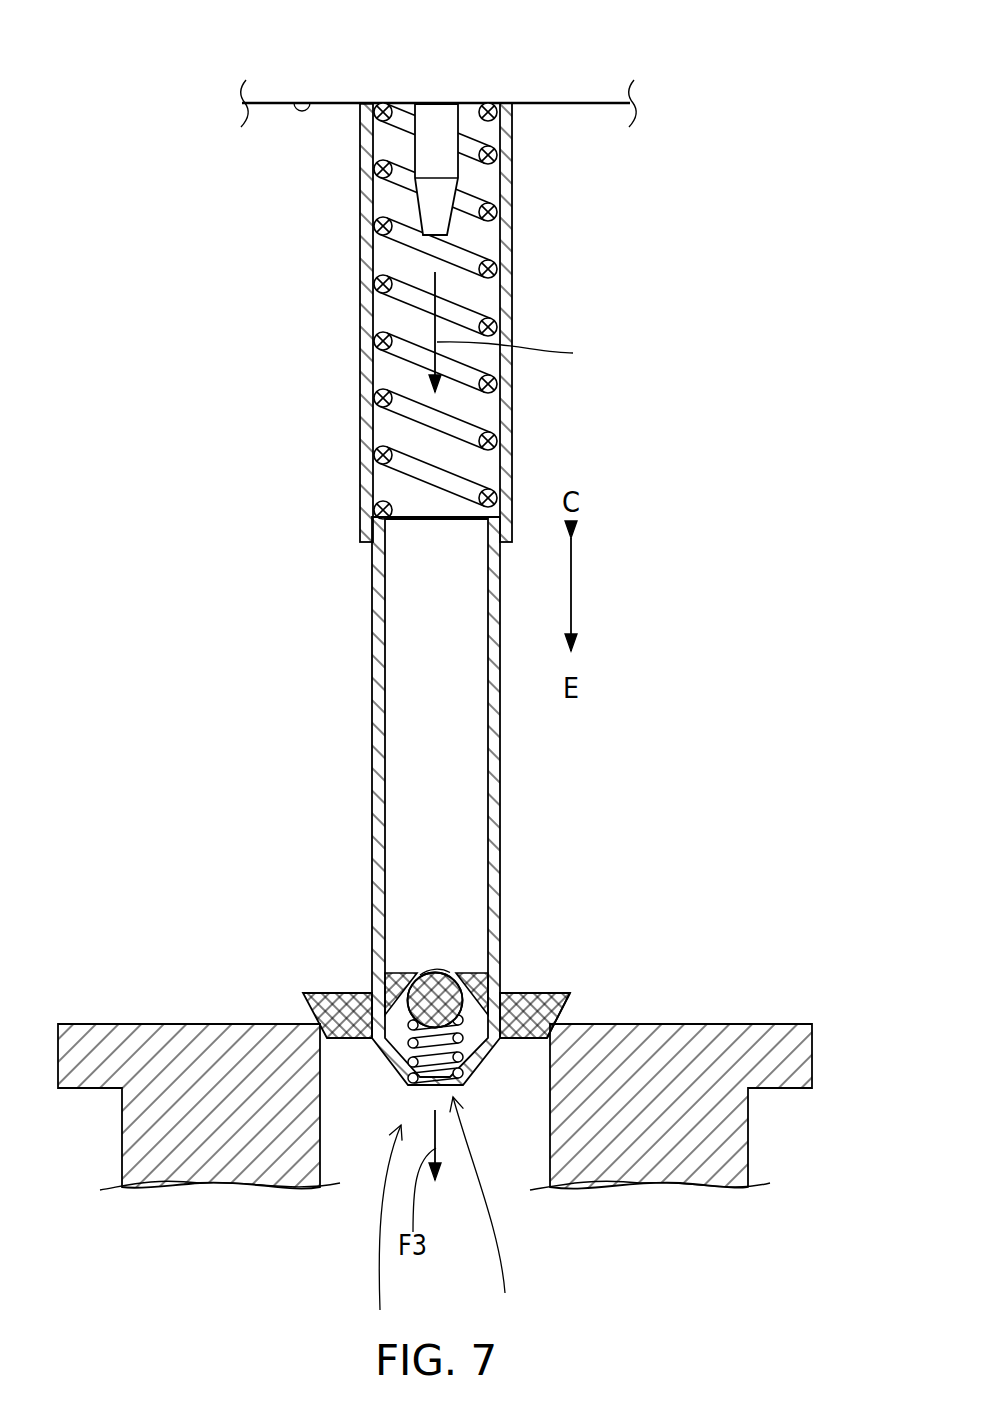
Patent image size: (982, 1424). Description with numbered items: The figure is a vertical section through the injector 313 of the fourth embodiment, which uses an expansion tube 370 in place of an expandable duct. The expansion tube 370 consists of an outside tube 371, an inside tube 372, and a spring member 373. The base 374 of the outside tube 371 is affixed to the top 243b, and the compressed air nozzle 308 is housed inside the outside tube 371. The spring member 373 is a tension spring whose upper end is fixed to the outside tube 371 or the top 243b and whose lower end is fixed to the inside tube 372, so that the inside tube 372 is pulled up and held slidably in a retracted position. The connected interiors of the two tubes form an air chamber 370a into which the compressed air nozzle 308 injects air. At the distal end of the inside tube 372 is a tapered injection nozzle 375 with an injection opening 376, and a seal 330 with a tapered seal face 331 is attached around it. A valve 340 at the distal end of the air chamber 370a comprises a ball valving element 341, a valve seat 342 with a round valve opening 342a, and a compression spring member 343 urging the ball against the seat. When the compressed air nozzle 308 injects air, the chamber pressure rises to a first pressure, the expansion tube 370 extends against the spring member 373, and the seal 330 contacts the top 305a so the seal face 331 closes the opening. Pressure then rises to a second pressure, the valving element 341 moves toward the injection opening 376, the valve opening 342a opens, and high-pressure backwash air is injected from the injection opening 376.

The top 243b is at (299, 100).
The compressed air nozzle 308 is at (433, 128).
The injector 313 is at (192, 259).
The base 374 is at (354, 128).
The expansion tube 370 is at (197, 500).
The outside tube 371 is at (360, 483).
The spring member 373 is at (392, 468).
The inside tube 372 is at (372, 627).
The air chamber 370a is at (410, 668).
The valve 340 is at (197, 842).
The valving element 341 is at (433, 973).
The valve seat 342 is at (404, 986).
The valve opening 342a is at (449, 970).
The spring member 343 is at (408, 1025).
The seal 330 is at (530, 993).
The seal face 331 is at (563, 1010).
The top 305a is at (94, 1024).
The injection nozzle 375 is at (381, 1233).
The injection opening 376 is at (490, 1213).